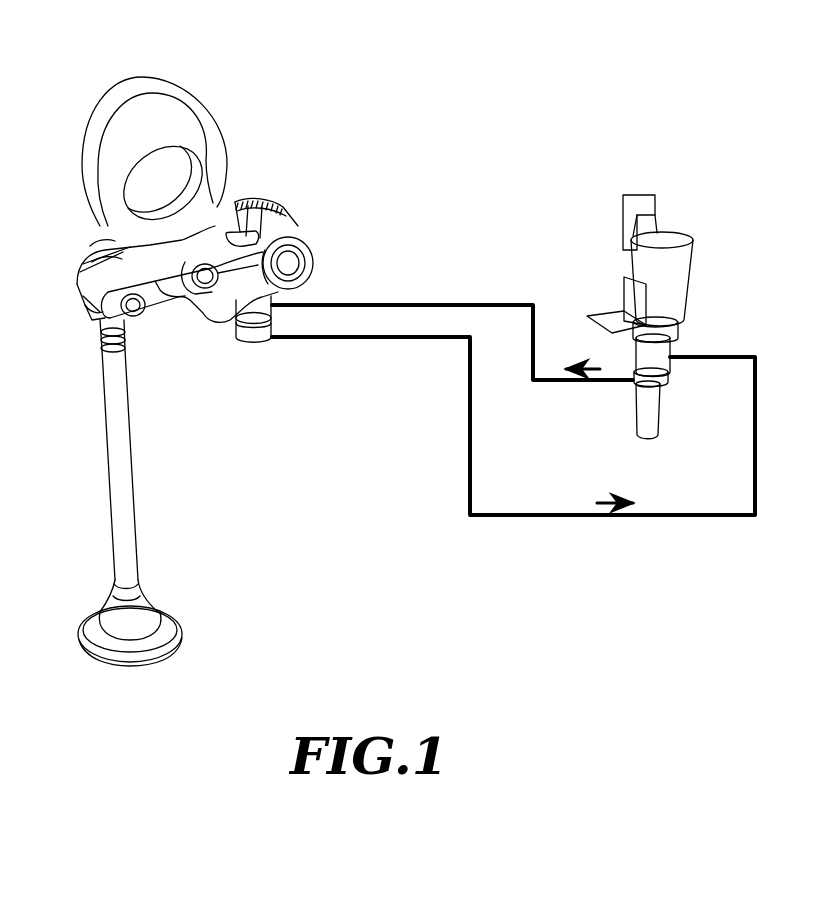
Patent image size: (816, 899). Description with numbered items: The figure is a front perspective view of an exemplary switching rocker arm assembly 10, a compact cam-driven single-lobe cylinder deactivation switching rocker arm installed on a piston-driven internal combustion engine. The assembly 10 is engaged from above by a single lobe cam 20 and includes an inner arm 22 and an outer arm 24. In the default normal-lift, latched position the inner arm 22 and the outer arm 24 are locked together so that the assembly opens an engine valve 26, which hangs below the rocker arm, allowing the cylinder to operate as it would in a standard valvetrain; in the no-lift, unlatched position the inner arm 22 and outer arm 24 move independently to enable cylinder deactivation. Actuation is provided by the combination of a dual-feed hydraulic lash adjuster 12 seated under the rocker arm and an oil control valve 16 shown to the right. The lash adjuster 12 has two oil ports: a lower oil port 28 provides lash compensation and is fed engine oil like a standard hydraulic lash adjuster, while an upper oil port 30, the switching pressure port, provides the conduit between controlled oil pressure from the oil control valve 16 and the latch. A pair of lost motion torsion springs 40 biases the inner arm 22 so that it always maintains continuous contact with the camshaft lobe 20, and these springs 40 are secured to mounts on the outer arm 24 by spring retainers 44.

The switching rocker arm assembly 10 is at (260, 181).
The dual-feed hydraulic lash adjuster 12 is at (272, 358).
The oil control valve 16 is at (589, 241).
The single lobe cam 20 is at (111, 66).
The inner arm 22 is at (124, 261).
The outer arm 24 is at (103, 241).
The engine valve 26 is at (118, 617).
The lower oil port 28 is at (370, 338).
The upper oil port 30 is at (405, 306).
The lost motion torsion springs 40 is at (304, 219).
The spring retainers 44 is at (313, 268).